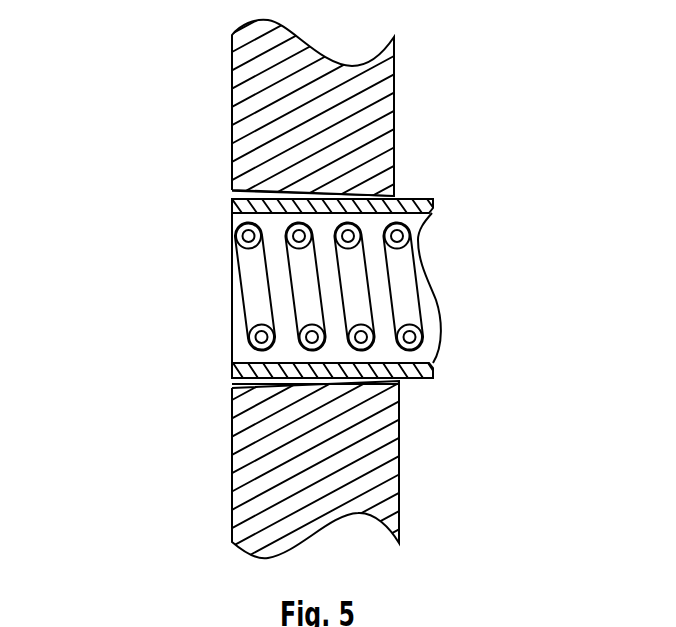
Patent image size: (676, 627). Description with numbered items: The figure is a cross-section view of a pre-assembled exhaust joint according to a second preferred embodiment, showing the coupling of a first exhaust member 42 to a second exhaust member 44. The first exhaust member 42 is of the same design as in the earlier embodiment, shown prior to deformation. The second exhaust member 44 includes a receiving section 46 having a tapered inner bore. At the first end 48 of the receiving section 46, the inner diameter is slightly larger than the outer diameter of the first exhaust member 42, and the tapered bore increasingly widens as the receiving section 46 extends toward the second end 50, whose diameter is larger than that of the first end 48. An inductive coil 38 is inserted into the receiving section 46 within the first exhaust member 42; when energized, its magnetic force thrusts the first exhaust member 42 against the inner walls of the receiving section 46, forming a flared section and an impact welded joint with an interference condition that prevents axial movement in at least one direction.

The inductive coil 38 is at (258, 259).
The first exhaust member 42 is at (232, 200).
The second exhaust member 44 is at (243, 435).
The receiving section 46 is at (311, 193).
The first end 48 is at (405, 213).
The second end 50 is at (238, 190).